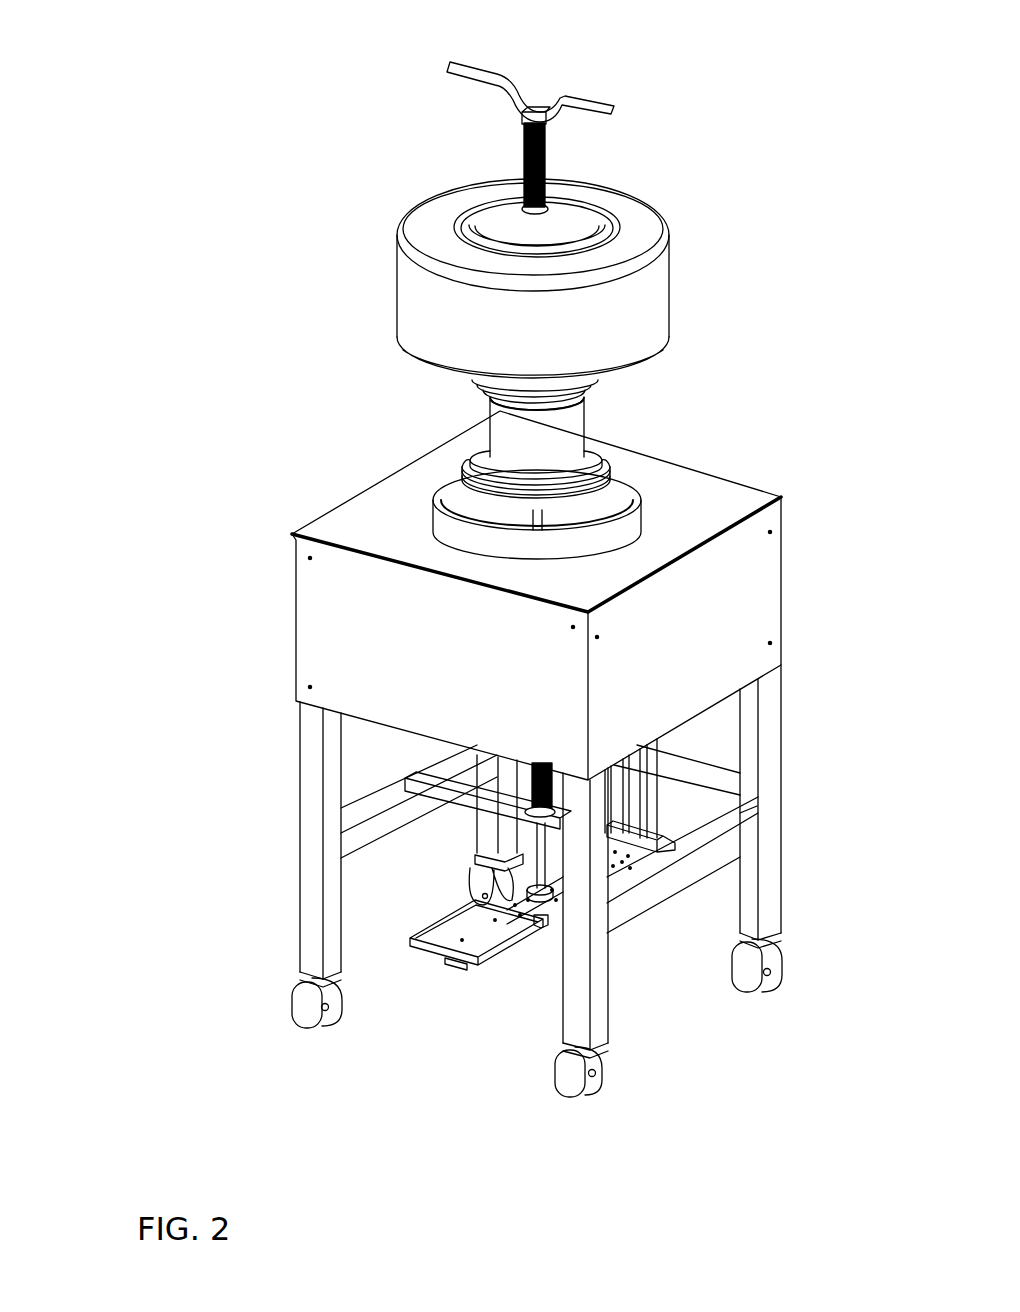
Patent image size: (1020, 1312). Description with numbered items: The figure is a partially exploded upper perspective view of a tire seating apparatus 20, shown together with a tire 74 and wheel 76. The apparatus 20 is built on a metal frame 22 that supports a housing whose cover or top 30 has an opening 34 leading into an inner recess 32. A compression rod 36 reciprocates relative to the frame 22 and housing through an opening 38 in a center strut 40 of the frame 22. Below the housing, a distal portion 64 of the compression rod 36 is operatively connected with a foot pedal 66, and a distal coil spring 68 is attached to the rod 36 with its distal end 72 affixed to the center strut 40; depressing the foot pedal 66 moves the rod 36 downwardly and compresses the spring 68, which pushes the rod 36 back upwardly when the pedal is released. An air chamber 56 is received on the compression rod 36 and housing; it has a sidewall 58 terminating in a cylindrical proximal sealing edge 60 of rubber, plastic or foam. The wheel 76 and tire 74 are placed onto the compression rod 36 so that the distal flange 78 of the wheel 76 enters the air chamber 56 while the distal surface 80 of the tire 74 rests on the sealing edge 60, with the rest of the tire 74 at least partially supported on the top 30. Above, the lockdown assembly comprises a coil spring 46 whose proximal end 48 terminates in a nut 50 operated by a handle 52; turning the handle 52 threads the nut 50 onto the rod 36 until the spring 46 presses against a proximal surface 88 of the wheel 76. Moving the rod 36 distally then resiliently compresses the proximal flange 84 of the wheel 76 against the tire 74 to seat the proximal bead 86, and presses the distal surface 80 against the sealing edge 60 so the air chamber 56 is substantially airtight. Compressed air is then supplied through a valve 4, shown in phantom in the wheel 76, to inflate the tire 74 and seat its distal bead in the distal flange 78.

The tire seating apparatus 20 is at (190, 539).
The frame 22 is at (292, 688).
The cover 30 is at (720, 522).
The inner recess 32 is at (447, 520).
The opening 34 is at (633, 520).
The compression rod 36 is at (537, 867).
The opening 38 is at (487, 820).
The center strut 40 is at (657, 850).
The valve 4 is at (473, 390).
The coil spring 46 is at (523, 160).
The proximal end 48 is at (543, 127).
The nut 50 is at (532, 113).
The handle 52 is at (587, 105).
The air chamber 56 is at (500, 540).
The sidewall 58 is at (467, 533).
The proximal sealing edge 60 is at (463, 520).
The distal portion 64 is at (550, 847).
The foot pedal 66 is at (445, 940).
The coil spring 68 is at (533, 787).
The distal end 72 is at (553, 813).
The tire 74 is at (660, 290).
The wheel 76 is at (567, 428).
The distal flange 78 is at (630, 510).
The distal surface 80 is at (627, 377).
The proximal flange 84 is at (513, 395).
The proximal bead 86 is at (600, 217).
The proximal surface 88 is at (550, 390).